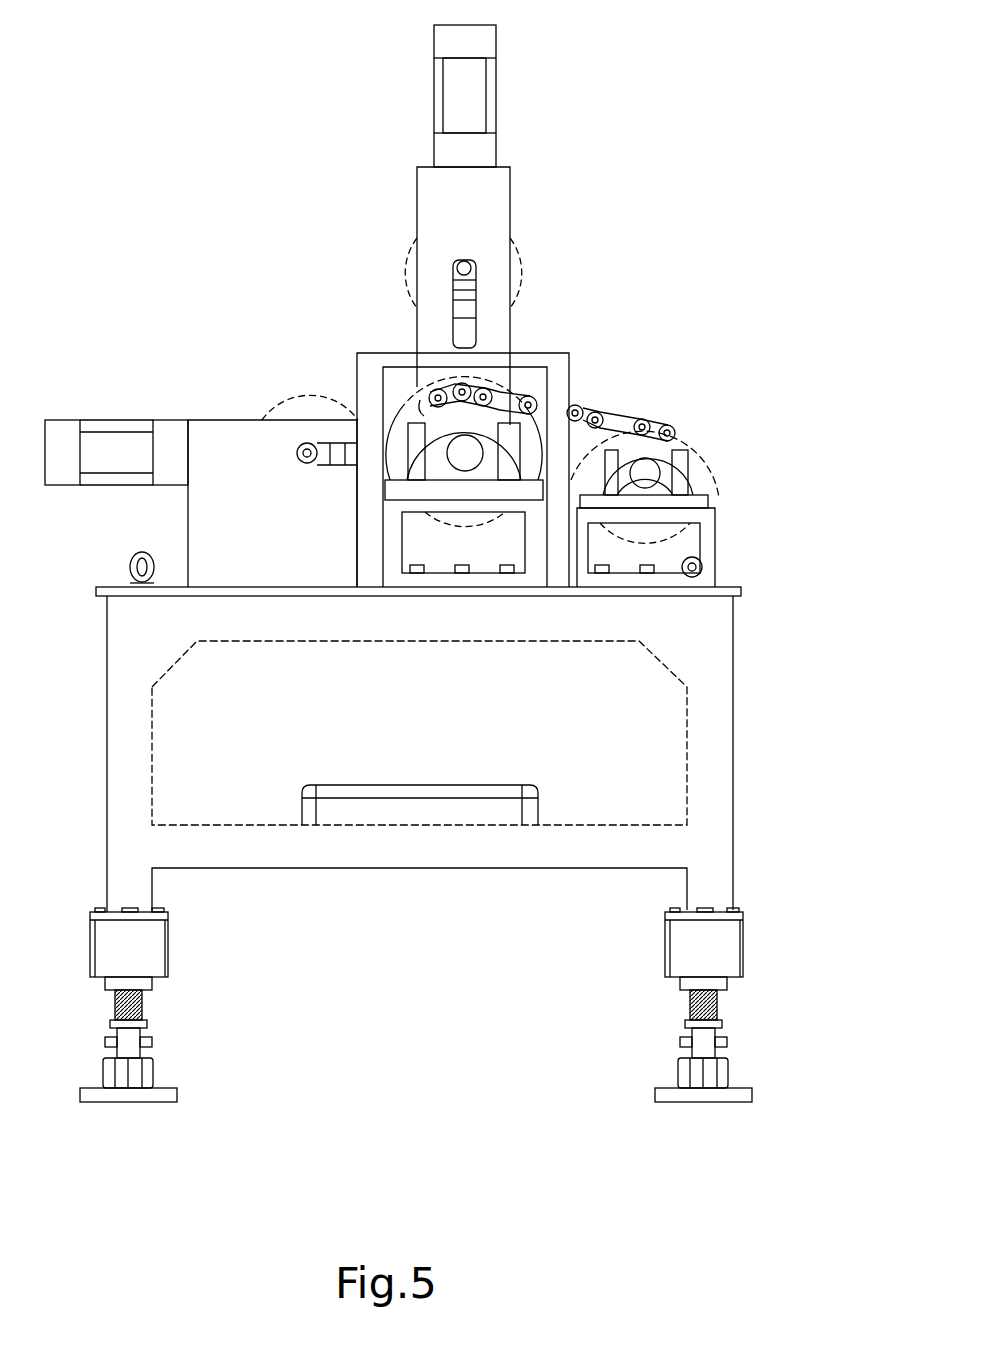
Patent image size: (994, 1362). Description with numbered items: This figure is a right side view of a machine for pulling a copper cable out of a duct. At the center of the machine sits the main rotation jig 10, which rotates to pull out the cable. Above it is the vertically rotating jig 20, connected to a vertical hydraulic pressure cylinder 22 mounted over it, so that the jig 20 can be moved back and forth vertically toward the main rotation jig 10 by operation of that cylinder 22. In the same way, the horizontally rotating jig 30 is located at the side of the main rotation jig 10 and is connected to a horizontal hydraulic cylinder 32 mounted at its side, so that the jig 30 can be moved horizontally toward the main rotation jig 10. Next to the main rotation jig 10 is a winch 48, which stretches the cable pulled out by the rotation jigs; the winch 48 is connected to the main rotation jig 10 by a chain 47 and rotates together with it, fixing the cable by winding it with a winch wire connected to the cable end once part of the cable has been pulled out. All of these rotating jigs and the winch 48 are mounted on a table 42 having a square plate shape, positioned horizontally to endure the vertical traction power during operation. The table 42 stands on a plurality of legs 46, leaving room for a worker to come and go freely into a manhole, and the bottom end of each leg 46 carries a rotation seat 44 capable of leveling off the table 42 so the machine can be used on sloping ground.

The main rotation jig 10 is at (407, 420).
The vertically rotating jig 20 is at (515, 268).
The vertical hydraulic pressure cylinder 22 is at (477, 42).
The horizontally rotating jig 30 is at (302, 408).
The horizontal hydraulic cylinder 32 is at (63, 437).
The table 42 is at (723, 593).
The rotation seat 44 is at (727, 1075).
The legs 46 is at (710, 753).
The chain 47 is at (685, 463).
The winch 48 is at (683, 420).